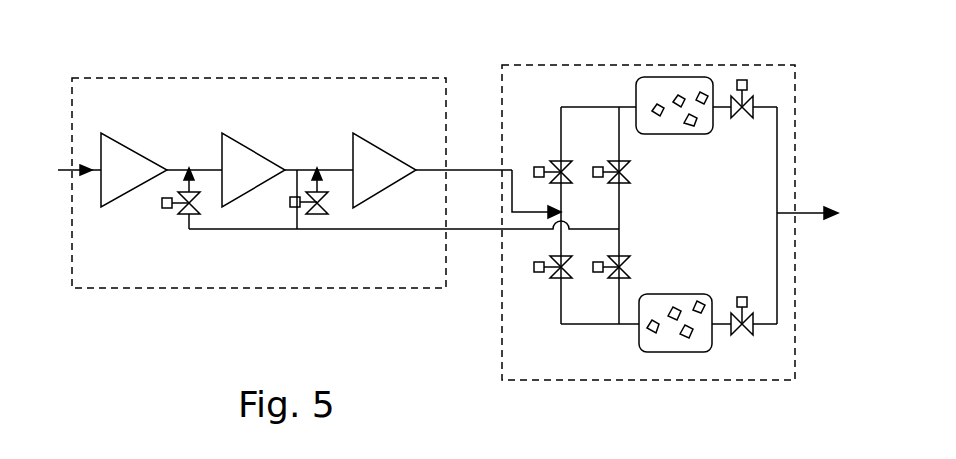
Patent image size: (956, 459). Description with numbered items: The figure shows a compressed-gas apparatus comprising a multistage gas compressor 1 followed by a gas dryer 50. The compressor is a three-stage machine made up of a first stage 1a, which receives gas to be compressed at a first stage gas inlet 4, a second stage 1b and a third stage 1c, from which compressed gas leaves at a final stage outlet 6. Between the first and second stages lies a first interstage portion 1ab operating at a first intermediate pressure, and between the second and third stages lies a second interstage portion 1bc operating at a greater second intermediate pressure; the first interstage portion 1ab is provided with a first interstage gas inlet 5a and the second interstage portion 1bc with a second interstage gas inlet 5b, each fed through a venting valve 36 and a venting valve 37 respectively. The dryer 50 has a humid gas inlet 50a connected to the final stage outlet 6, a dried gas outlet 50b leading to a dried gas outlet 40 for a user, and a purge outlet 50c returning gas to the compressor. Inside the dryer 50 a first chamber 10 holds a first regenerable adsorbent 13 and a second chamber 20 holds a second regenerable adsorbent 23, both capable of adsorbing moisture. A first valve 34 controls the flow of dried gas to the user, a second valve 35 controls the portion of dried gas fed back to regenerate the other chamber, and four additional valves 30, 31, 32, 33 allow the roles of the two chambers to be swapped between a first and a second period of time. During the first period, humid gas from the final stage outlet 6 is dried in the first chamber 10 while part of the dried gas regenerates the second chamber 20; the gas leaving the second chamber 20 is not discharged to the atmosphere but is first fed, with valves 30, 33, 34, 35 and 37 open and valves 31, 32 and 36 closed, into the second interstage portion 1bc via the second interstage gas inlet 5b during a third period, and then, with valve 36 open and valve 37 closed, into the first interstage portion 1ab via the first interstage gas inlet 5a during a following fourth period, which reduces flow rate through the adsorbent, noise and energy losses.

The multistage gas compressor 1 is at (187, 77).
The first stage 1a is at (134, 170).
The second stage 1b is at (253, 170).
The third stage 1c is at (384, 170).
The first interstage portion 1ab is at (171, 150).
The second interstage portion 1bc is at (299, 150).
The first stage gas inlet 4 is at (63, 169).
The first interstage gas inlet 5a is at (189, 166).
The second interstage gas inlet 5b is at (317, 167).
The final stage outlet 6 is at (434, 168).
The venting valve 36 is at (185, 216).
The venting valve 37 is at (310, 215).
The dryer 50 is at (547, 65).
The humid gas inlet 50a is at (493, 168).
The dried gas outlet 50b is at (797, 213).
The purge outlet 50c is at (497, 232).
The first chamber 10 is at (679, 95).
The first regenerable adsorbent 13 is at (690, 122).
The second chamber 20 is at (679, 343).
The second regenerable adsorbent 23 is at (708, 288).
The additional valve 30 is at (550, 158).
The additional valve 31 is at (553, 280).
The additional valve 32 is at (628, 178).
The additional valve 33 is at (628, 262).
The first valve 34 is at (738, 120).
The second valve 35 is at (746, 332).
The dried gas outlet 40 is at (829, 218).